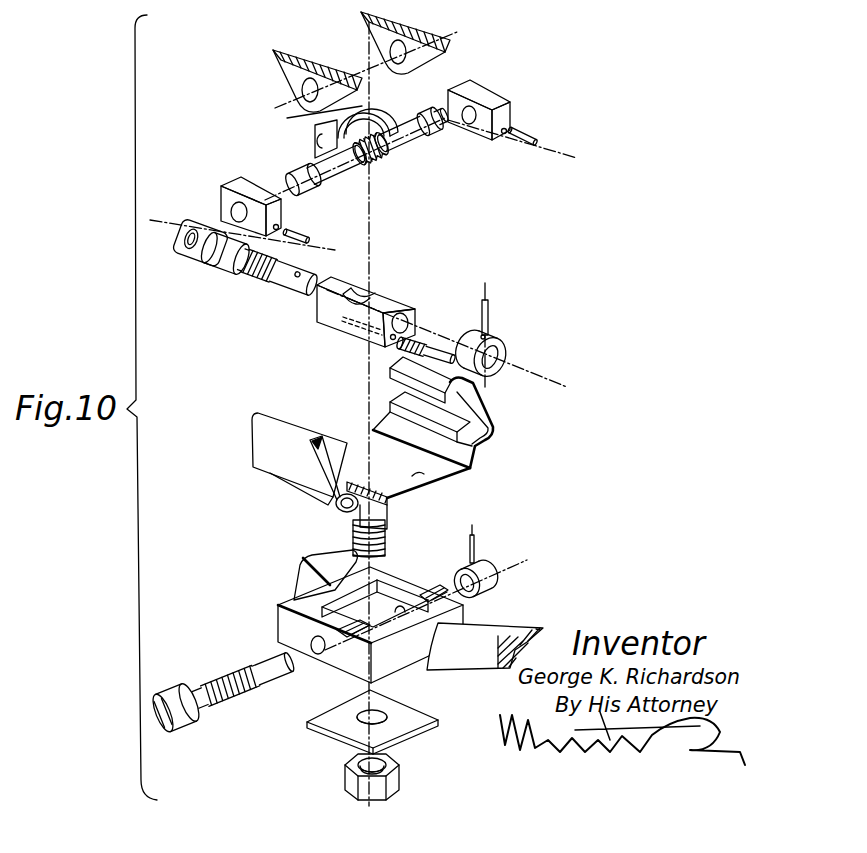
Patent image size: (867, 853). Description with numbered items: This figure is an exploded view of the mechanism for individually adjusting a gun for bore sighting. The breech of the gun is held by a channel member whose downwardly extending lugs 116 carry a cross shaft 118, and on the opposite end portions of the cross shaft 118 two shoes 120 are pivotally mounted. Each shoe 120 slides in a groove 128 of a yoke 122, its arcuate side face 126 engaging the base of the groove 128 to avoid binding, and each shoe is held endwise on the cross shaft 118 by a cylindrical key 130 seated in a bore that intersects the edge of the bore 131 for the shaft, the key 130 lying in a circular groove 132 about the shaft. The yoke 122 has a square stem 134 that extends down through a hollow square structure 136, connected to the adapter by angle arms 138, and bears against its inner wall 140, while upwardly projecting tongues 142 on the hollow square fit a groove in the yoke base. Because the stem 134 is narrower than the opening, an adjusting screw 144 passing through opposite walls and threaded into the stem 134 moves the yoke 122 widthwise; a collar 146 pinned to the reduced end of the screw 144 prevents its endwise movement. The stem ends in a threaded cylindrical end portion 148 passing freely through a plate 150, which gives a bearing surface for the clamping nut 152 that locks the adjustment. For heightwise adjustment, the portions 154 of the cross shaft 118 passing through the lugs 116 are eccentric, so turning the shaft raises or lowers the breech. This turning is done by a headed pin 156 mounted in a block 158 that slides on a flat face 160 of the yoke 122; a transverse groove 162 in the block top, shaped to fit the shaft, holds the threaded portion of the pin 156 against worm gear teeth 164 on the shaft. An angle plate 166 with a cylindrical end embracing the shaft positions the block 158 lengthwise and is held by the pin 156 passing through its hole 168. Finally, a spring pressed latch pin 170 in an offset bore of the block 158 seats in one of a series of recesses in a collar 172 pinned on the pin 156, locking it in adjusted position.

The lugs 116 is at (306, 47).
The cross shaft 118 is at (439, 135).
The shoes 120 is at (502, 97).
The yoke 122 is at (482, 449).
The arcuate side face 126 is at (503, 97).
The groove 128 is at (467, 406).
The cylindrical key 130 is at (524, 129).
The bore 131 is at (463, 91).
The circular groove 132 is at (436, 127).
The square stem 134 is at (400, 503).
The hollow square structure 136 is at (370, 625).
The angle arms 138 is at (418, 610).
The inner wall 140 is at (375, 603).
The tongues 142 is at (427, 587).
The adjusting screw 144 is at (235, 684).
The collar 146 is at (477, 571).
The threaded cylindrical end portion 148 is at (352, 526).
The plate 150 is at (372, 722).
The clamping nut 152 is at (347, 776).
The eccentric portions 154 is at (408, 142).
The headed pin 156 is at (289, 283).
The block 158 is at (408, 300).
The flat face 160 is at (413, 473).
The transverse groove 162 is at (372, 292).
The worm gear teeth 164 is at (387, 145).
The angle plate 166 is at (343, 123).
The hole 168 is at (326, 146).
The spring pressed latch pin 170 is at (437, 347).
The collar 172 is at (506, 344).